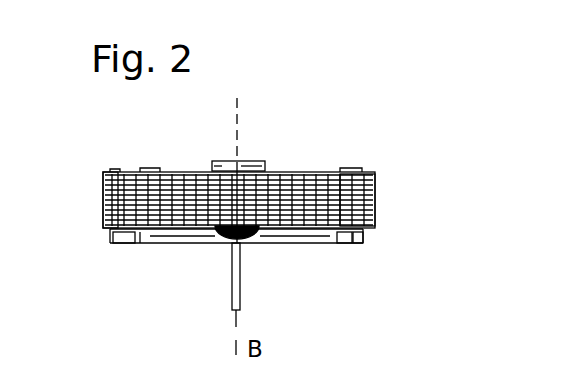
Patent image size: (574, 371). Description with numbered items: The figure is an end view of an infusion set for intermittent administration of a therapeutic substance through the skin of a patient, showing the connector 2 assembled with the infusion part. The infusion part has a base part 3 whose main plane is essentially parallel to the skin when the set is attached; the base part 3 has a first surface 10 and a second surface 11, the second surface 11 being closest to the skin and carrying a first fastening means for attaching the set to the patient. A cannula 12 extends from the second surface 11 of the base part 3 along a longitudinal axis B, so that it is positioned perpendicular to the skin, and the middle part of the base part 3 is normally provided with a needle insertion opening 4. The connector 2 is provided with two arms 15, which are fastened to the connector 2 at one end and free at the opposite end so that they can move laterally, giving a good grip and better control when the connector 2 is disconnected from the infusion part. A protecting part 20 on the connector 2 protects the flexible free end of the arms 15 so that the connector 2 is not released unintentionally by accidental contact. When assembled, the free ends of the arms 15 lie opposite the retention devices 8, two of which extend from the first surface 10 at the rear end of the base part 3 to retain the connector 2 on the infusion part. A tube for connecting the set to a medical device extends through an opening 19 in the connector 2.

The connector 2 is at (175, 190).
The base part 3 is at (172, 238).
The needle insertion opening 4 is at (238, 163).
The retention devices 8 is at (120, 232).
The first surface 10 is at (300, 230).
The second surface 11 is at (190, 245).
The cannula 12 is at (240, 272).
The arms 15 is at (110, 207).
The opening 19 is at (243, 197).
The protecting part 20 is at (338, 198).